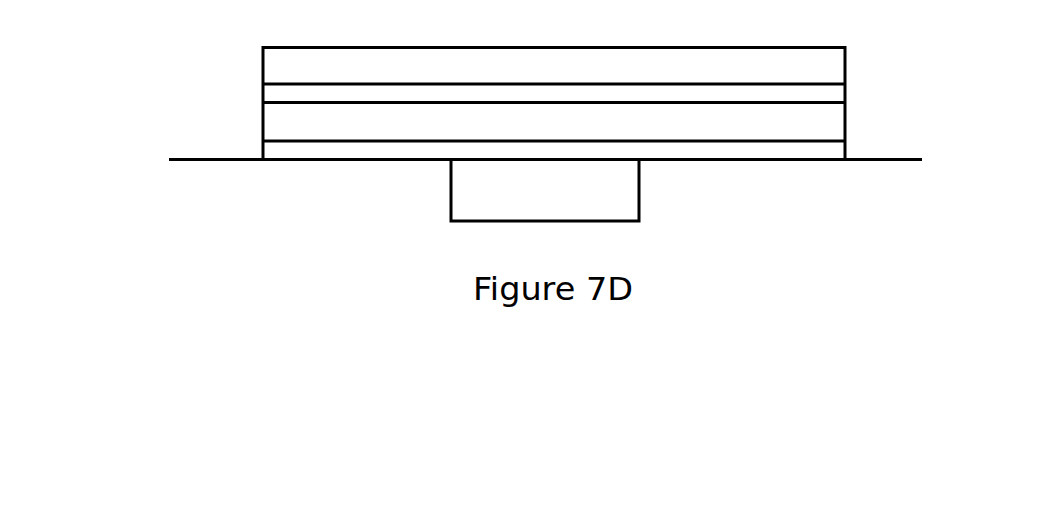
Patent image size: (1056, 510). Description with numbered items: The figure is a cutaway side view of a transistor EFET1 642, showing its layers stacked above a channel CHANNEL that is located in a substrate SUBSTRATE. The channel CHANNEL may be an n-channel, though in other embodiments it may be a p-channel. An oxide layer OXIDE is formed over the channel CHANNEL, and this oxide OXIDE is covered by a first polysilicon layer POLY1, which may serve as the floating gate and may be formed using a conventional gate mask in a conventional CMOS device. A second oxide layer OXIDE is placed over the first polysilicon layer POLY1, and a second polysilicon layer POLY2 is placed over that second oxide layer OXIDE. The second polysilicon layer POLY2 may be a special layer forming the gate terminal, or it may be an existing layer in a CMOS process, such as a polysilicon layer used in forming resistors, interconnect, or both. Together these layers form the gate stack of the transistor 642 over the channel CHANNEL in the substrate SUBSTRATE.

The EFET1 transistor 642 is at (501, 104).
The second polysilicon layer POLY2 is at (845, 66).
The oxide layer OXIDE is at (845, 93).
The first polysilicon layer POLY1 is at (845, 122).
The channel CHANNEL is at (545, 191).
The substrate SUBSTRATE is at (545, 196).